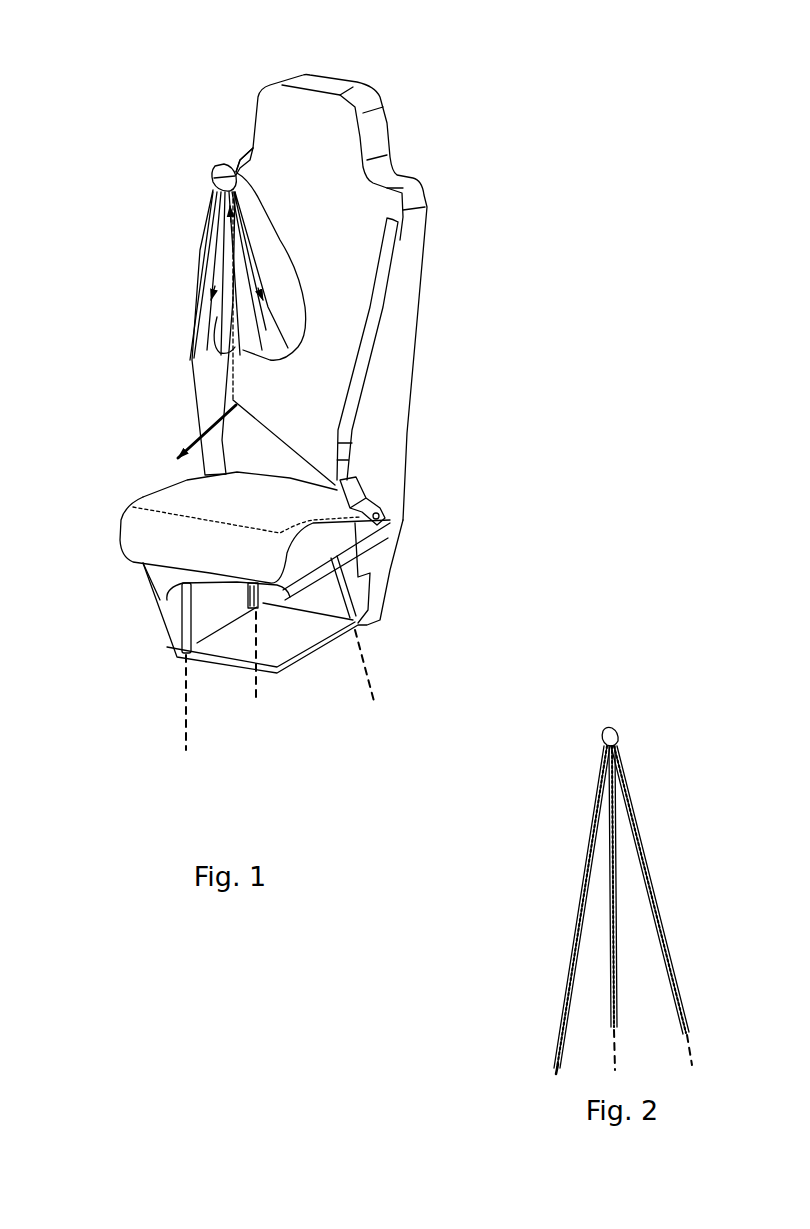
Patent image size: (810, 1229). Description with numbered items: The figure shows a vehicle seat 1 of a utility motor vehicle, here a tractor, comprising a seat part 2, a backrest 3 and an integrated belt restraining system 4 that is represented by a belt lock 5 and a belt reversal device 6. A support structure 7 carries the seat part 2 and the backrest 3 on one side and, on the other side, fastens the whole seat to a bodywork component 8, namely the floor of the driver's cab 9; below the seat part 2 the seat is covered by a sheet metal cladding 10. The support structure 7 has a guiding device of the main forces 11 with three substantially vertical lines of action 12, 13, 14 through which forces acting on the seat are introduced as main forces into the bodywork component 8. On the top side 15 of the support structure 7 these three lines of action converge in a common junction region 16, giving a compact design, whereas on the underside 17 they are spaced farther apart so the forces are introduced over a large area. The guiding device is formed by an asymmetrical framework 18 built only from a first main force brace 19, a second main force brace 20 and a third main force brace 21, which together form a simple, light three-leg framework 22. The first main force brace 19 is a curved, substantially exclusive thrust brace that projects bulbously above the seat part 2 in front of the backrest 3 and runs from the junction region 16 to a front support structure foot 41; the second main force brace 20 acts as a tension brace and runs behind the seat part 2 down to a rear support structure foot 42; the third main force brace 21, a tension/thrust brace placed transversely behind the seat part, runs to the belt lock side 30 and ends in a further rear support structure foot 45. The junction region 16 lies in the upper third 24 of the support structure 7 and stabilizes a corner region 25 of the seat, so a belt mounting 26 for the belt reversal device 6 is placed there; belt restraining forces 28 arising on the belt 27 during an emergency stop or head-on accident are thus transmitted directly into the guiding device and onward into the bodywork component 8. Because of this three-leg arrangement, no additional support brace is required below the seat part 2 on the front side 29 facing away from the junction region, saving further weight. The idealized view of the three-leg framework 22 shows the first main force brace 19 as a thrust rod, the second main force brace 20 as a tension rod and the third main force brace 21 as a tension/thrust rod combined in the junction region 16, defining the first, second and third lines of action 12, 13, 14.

In FIG. 1, the vehicle seat 1 is at (512, 103).
In FIG. 1, the seat part 2 is at (173, 508).
In FIG. 1, the backrest 3 is at (360, 220).
In FIG. 1, the belt restraining system 4 is at (423, 543).
In FIG. 1, the belt lock 5 is at (366, 481).
In FIG. 1, the belt reversal device 6 is at (207, 177).
In FIG. 2, the belt reversal device 6 is at (605, 730).
In FIG. 1, the support structure 7 is at (172, 223).
In FIG. 1, the bodywork component 8 is at (317, 637).
In FIG. 1, the floor of the driver's cab 9 is at (263, 617).
In FIG. 1, the sheet metal cladding 10 is at (143, 577).
In FIG. 1, the guiding device of the main forces 11 is at (130, 268).
In FIG. 1, the first line of action of the main forces 12 is at (187, 727).
In FIG. 2, the first line of action of the main forces 12 is at (555, 1060).
In FIG. 1, the second line of action of the main forces 13 is at (257, 705).
In FIG. 2, the second line of action of the main forces 13 is at (618, 1047).
In FIG. 1, the third line of action of the main forces 14 is at (367, 680).
In FIG. 2, the third line of action of the main forces 14 is at (688, 1040).
In FIG. 1, the top side 15 is at (173, 195).
In FIG. 1, the junction region 16 is at (218, 163).
In FIG. 2, the junction region 16 is at (615, 730).
In FIG. 1, the underside 17 is at (90, 647).
In FIG. 1, the asymmetrical framework 18 is at (485, 330).
In FIG. 1, the first main force brace 19 is at (197, 285).
In FIG. 2, the first main force brace 19 is at (580, 948).
In FIG. 1, the second main force brace 20 is at (187, 320).
In FIG. 2, the second main force brace 20 is at (616, 980).
In FIG. 1, the third main force brace 21 is at (180, 337).
In FIG. 2, the third main force brace 21 is at (663, 927).
In FIG. 1, the three-leg framework 22 is at (265, 220).
In FIG. 2, the three-leg framework 22 is at (674, 787).
In FIG. 1, the upper third 24 is at (488, 238).
In FIG. 1, the corner region 25 is at (238, 157).
In FIG. 1, the belt mounting 26 is at (222, 143).
In FIG. 1, the belt 27 is at (293, 453).
In FIG. 1, the belt restraining forces 28 is at (187, 413).
In FIG. 1, the front side facing away 29 is at (320, 680).
In FIG. 1, the belt lock side 30 is at (412, 148).
In FIG. 1, the front support structure foot 41 is at (163, 667).
In FIG. 1, the rear support structure foot 42 is at (243, 627).
In FIG. 1, the further rear support structure foot 45 is at (387, 623).